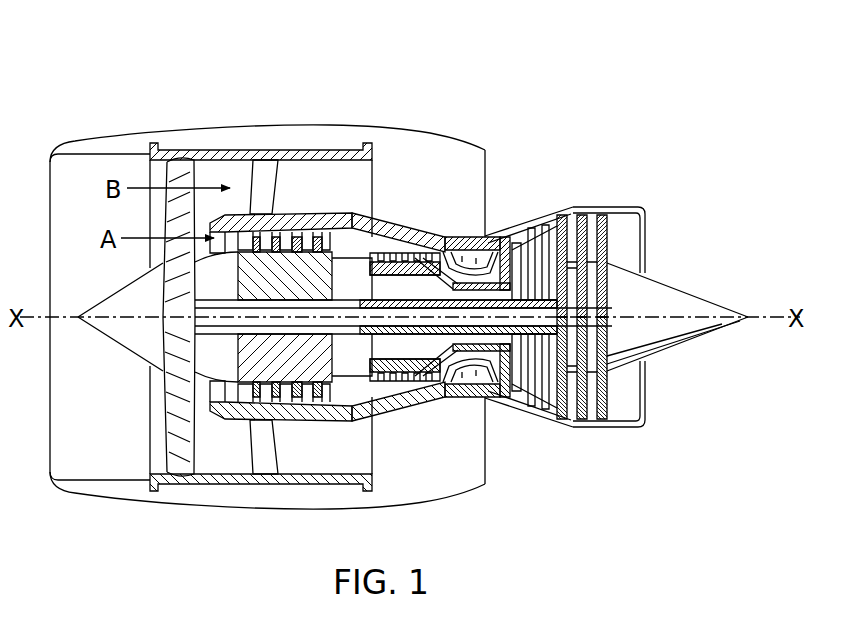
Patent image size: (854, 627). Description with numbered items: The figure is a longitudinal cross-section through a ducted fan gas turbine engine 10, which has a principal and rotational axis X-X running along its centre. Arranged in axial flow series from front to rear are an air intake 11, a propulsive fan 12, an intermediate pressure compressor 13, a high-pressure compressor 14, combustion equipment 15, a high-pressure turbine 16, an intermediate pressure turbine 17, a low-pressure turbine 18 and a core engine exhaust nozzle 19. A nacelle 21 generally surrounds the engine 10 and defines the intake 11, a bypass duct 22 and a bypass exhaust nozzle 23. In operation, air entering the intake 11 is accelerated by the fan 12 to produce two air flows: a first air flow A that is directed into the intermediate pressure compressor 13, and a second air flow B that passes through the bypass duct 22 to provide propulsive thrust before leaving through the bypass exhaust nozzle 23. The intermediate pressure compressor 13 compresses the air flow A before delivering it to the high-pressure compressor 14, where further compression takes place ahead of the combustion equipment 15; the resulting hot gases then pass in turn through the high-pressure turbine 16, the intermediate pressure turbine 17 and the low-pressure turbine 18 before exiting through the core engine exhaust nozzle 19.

The ducted fan gas turbine engine 10 is at (117, 101).
The air intake 11 is at (100, 157).
The propulsive fan 12 is at (166, 429).
The intermediate pressure compressor 13 is at (296, 403).
The high-pressure compressor 14 is at (394, 256).
The combustion equipment 15 is at (452, 379).
The high-pressure turbine 16 is at (497, 399).
The intermediate pressure turbine 17 is at (537, 236).
The low-pressure turbine 18 is at (555, 424).
The core engine exhaust nozzle 19 is at (644, 212).
The nacelle 21 is at (271, 124).
The bypass duct 22 is at (457, 193).
The bypass exhaust nozzle 23 is at (487, 151).